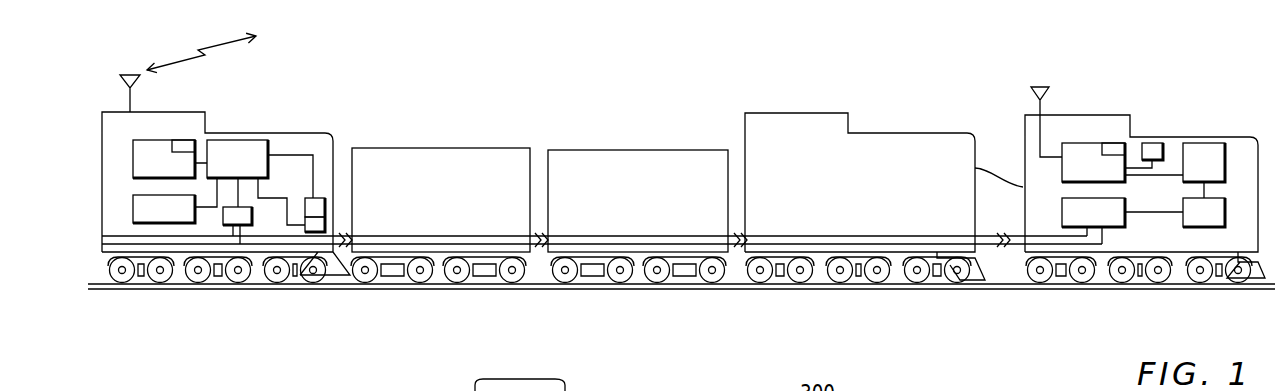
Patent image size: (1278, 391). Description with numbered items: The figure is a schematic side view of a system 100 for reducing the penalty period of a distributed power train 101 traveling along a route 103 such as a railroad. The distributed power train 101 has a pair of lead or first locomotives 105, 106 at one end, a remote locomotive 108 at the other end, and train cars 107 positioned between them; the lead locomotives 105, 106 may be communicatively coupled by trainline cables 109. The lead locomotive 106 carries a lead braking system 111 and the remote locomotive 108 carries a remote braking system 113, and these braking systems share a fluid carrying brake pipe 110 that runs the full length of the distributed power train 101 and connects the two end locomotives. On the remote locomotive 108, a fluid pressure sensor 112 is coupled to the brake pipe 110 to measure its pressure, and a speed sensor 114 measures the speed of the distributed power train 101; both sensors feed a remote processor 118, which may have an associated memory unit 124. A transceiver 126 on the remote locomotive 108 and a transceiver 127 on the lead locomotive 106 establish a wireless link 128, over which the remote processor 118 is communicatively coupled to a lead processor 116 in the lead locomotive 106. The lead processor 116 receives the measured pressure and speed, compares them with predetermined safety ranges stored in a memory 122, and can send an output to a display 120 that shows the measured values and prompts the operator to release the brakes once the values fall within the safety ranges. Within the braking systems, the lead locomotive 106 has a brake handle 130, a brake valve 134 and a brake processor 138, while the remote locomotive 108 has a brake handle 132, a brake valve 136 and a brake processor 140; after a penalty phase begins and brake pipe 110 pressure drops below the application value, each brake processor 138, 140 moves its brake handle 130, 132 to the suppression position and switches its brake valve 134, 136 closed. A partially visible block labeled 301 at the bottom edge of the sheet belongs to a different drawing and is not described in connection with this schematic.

The system 100 is at (487, 68).
The distributed power train 101 is at (463, 102).
The route 103 is at (437, 288).
The lead locomotive 105 is at (805, 103).
The lead locomotive 106 is at (1132, 182).
The train cars 107 is at (458, 138).
The remote locomotive 108 is at (246, 173).
The trainline cables 109 is at (1017, 187).
The brake pipe 110 is at (993, 245).
The lead braking system 111 is at (1157, 231).
The fluid pressure sensor 112 is at (325, 225).
The remote braking system 113 is at (212, 230).
The speed sensor 114 is at (325, 205).
The lead processor 116 is at (1088, 143).
The remote processor 118 is at (160, 140).
The display 120 is at (1152, 143).
The memory 122 is at (1115, 145).
The memory unit 124 is at (185, 140).
The transceiver 126 is at (128, 72).
The transceiver 127 is at (1040, 85).
The wireless link 128 is at (188, 60).
The brake handle 130 is at (1200, 227).
The brake handle 132 is at (153, 223).
The brake valve 134 is at (1110, 227).
The brake valve 136 is at (253, 213).
The brake processor 138 is at (1227, 157).
The brake processor 140 is at (247, 140).
The start step 301 is at (572, 390).